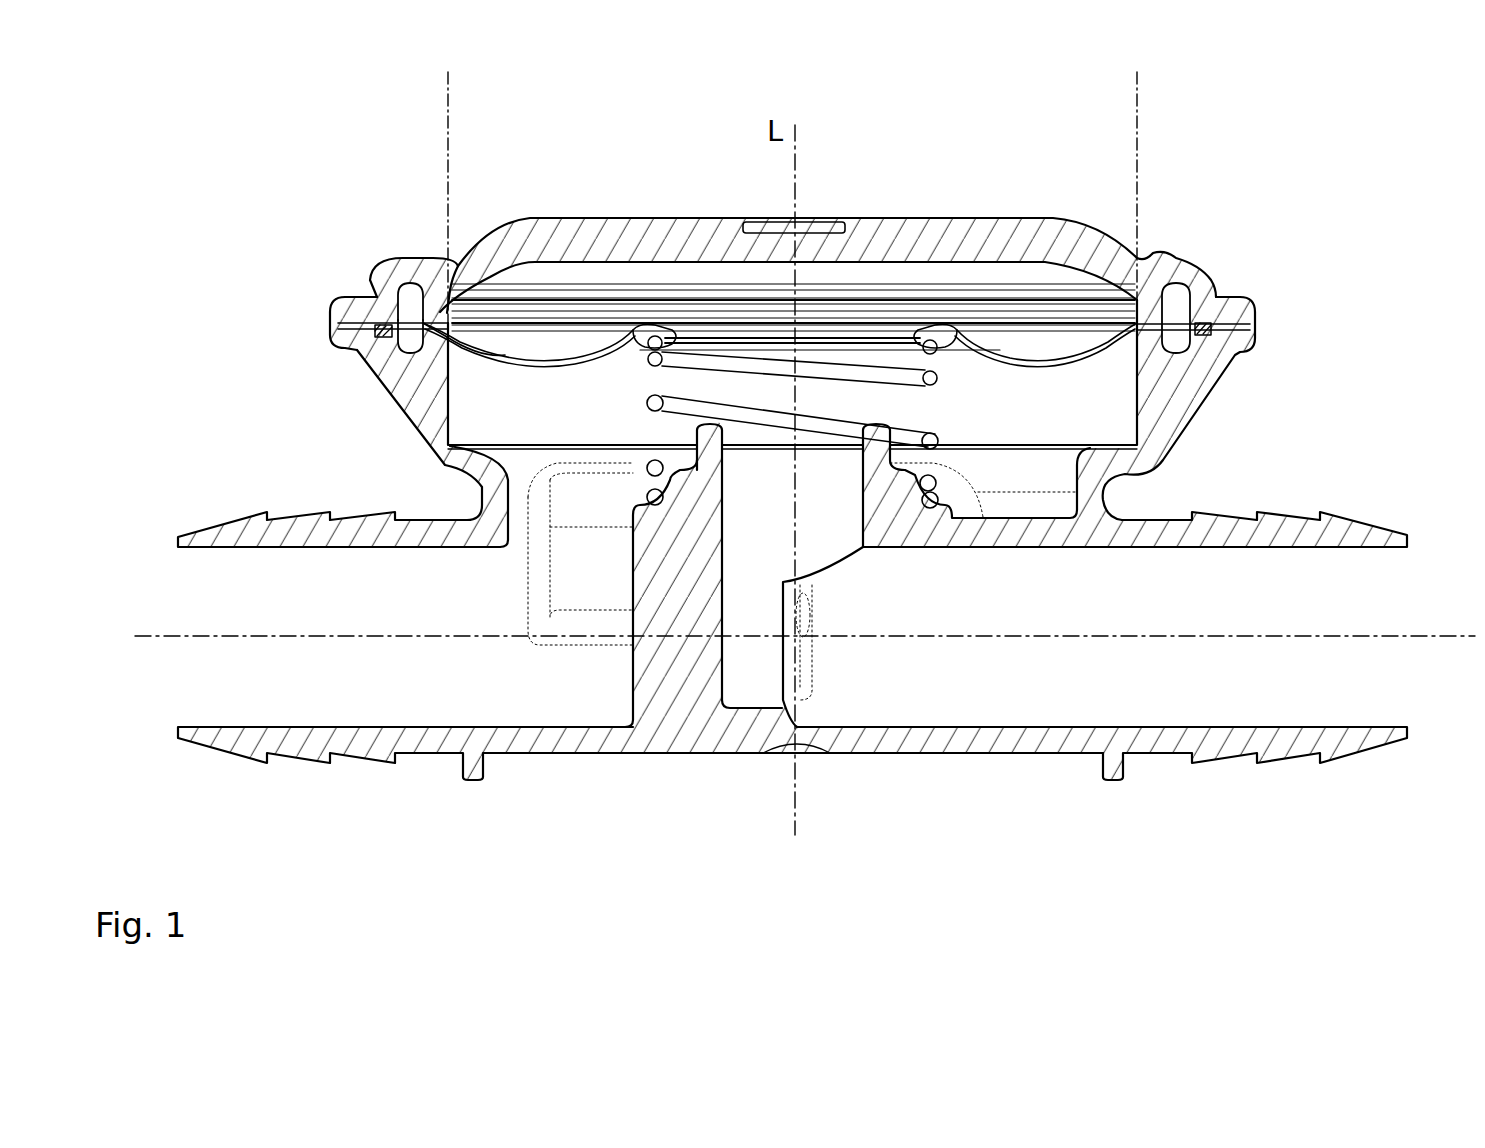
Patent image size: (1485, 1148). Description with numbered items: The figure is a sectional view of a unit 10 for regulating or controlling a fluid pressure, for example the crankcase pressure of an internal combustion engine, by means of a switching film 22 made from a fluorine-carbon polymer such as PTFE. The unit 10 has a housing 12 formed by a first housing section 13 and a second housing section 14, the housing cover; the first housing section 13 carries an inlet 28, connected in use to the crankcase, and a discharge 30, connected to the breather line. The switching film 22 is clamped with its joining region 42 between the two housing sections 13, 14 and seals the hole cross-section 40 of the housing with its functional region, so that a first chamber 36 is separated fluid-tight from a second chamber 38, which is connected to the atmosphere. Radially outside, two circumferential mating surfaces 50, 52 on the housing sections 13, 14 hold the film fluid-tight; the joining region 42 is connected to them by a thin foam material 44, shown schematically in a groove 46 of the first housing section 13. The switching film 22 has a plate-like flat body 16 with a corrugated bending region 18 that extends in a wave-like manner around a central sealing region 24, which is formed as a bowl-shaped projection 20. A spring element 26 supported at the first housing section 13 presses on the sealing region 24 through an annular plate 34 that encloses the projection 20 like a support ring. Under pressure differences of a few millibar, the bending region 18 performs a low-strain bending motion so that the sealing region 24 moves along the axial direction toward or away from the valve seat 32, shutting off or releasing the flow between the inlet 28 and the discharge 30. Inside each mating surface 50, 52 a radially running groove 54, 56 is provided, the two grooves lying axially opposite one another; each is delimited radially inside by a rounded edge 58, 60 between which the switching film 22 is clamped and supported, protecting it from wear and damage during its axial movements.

The unit 10 is at (779, 441).
The housing 12 is at (779, 451).
The first housing section 13 is at (1197, 390).
The second housing section 14 is at (1010, 220).
The plate-like flat body 16 is at (585, 345).
The bending region 18 is at (503, 347).
The bowl-shaped projection 20 is at (700, 335).
The switching film 22 is at (632, 340).
The sealing region 24 is at (828, 335).
The spring element 26 is at (938, 380).
The inlet 28 is at (227, 535).
The discharge 30 is at (1338, 533).
The valve seat 32 is at (697, 408).
The plate 34 is at (943, 335).
The first chamber 36 is at (472, 437).
The second chamber 38 is at (517, 355).
The hole cross-section 40 is at (1133, 91).
The joining region 42 is at (362, 306).
The foam material 44 is at (749, 302).
The groove 46 is at (390, 340).
The mating surface 50 is at (372, 337).
The mating surface 52 is at (358, 322).
The groove 54 is at (410, 350).
The groove 56 is at (413, 297).
The edge 58 is at (433, 338).
The edge 60 is at (432, 317).